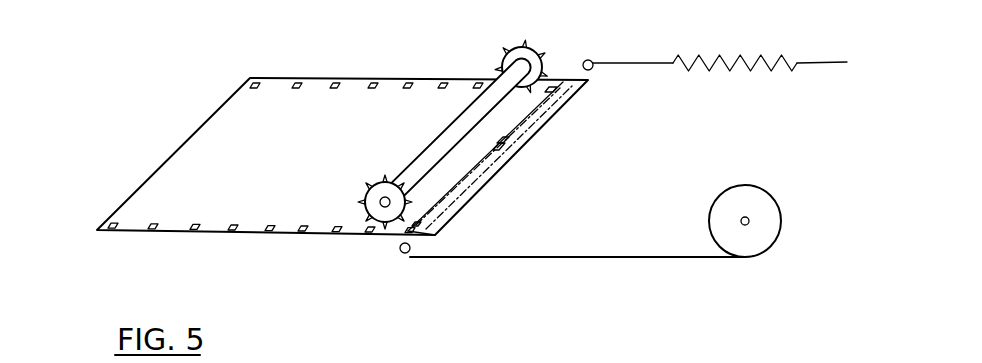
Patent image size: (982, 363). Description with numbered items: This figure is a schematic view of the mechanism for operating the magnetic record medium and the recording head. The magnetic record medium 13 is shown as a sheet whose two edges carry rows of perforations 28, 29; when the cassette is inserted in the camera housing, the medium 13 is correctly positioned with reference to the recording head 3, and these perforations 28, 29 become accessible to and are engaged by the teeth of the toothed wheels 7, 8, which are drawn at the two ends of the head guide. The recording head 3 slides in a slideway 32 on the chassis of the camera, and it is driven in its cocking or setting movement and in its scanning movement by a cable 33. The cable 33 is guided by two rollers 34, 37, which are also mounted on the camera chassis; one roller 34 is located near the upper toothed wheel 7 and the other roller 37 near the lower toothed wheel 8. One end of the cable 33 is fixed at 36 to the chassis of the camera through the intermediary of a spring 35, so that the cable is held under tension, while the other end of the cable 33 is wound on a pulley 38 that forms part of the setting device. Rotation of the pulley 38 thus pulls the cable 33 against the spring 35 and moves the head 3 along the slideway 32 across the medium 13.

The magnetic record medium 13 is at (188, 163).
The perforations 29 is at (258, 82).
The perforations 28 is at (153, 232).
The slideway 32 is at (560, 100).
The recording head 3 is at (503, 152).
The toothed wheel 7 is at (505, 58).
The toothed wheel 8 is at (372, 215).
The roller 34 is at (591, 60).
The spring 35 is at (722, 56).
The fixing point 36 is at (845, 66).
The roller 37 is at (405, 254).
The cable 33 is at (574, 257).
The pulley 38 is at (745, 247).